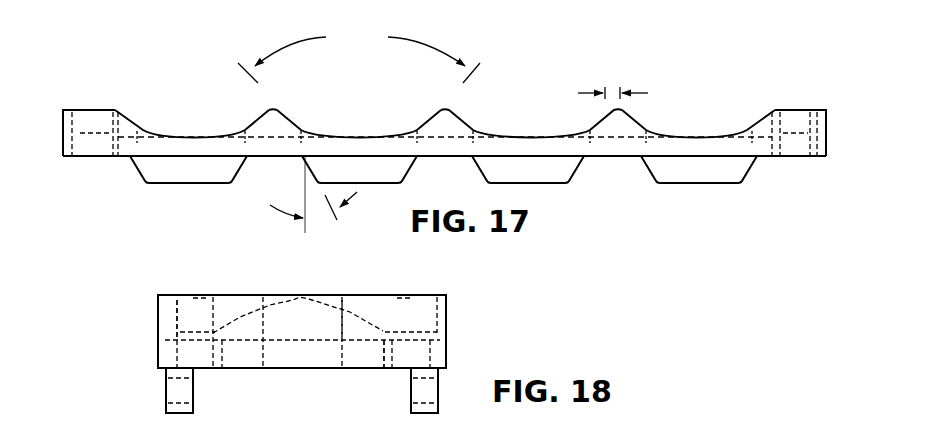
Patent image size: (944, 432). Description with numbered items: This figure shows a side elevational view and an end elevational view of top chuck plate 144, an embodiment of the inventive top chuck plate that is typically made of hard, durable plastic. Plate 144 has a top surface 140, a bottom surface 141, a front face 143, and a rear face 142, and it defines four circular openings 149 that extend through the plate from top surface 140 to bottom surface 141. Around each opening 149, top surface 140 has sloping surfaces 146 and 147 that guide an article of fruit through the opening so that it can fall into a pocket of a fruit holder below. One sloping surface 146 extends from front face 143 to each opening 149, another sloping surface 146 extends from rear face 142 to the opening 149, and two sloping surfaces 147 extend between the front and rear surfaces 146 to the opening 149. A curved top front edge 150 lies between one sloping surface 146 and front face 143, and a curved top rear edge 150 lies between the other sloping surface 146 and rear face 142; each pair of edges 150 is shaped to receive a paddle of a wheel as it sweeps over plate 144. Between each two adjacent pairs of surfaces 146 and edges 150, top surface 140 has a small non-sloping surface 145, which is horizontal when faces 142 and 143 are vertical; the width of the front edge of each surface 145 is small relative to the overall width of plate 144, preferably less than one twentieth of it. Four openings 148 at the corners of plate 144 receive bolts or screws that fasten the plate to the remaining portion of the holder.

In FIG. 17, the top surface 140 is at (104, 110).
In FIG. 17, the bottom surface 141 is at (113, 158).
In FIG. 18, the bottom surface 141 is at (240, 370).
In FIG. 18, the rear face 142 is at (158, 325).
In FIG. 17, the front face 143 is at (285, 142).
In FIG. 18, the front face 143 is at (447, 325).
In FIG. 17, the top chuck plate 144 is at (136, 68).
In FIG. 18, the top chuck plate 144 is at (138, 302).
In FIG. 17, the non-sloping surface 145 is at (449, 111).
In FIG. 17, the sloping surface 146 is at (240, 127).
In FIG. 18, the sloping surface 146 is at (366, 318).
In FIG. 18, the sloping surface 147 is at (302, 305).
In FIG. 17, the opening 148 is at (812, 128).
In FIG. 18, the opening 148 is at (168, 312).
In FIG. 17, the circular opening 149 is at (586, 145).
In FIG. 18, the circular opening 149 is at (388, 346).
In FIG. 17, the curved top edge 150 is at (405, 130).